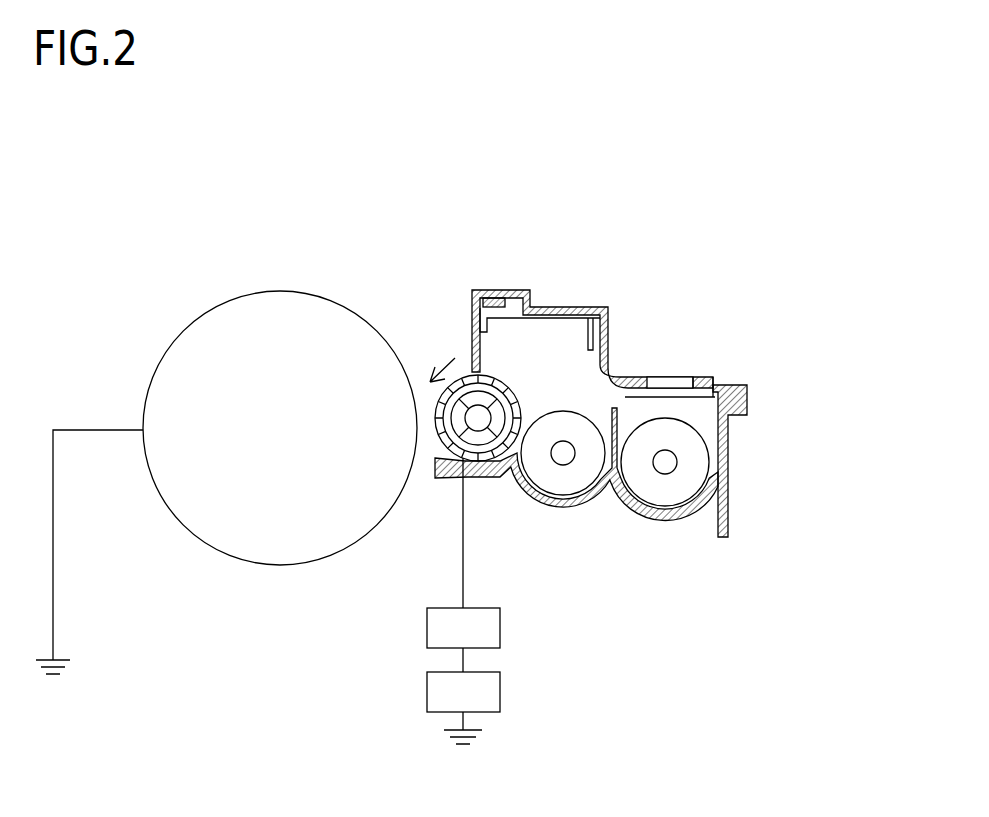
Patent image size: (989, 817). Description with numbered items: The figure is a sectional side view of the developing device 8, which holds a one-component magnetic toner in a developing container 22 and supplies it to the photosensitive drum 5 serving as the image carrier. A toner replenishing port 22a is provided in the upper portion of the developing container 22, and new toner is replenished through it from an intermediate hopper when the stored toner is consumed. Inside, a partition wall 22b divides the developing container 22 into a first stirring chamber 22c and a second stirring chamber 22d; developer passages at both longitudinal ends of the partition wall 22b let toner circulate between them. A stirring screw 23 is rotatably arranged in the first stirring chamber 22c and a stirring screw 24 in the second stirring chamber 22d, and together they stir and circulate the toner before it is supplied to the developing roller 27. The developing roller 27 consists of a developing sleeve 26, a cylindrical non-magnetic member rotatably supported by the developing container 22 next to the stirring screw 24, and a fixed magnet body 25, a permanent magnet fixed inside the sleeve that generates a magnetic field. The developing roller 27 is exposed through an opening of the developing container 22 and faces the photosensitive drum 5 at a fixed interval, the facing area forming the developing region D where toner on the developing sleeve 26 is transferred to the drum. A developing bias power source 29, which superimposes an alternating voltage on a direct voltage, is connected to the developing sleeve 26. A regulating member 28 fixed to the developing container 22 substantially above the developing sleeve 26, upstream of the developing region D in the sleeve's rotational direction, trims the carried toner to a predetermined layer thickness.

The photosensitive drum 5 is at (173, 342).
The developing device 8 is at (386, 216).
The developing container 22 is at (748, 406).
The toner replenishing port 22a is at (666, 385).
The partition wall 22b is at (627, 417).
The first stirring chamber 22c is at (708, 418).
The second stirring chamber 22d is at (605, 415).
The stirring screw 23 is at (670, 493).
The stirring screw 24 is at (560, 487).
The fixed magnet body 25 is at (488, 443).
The developing sleeve 26 is at (470, 458).
The developing roller 27 is at (498, 488).
The regulating member 28 is at (473, 323).
The developing bias power source 29 is at (546, 664).
The developing region D is at (413, 413).